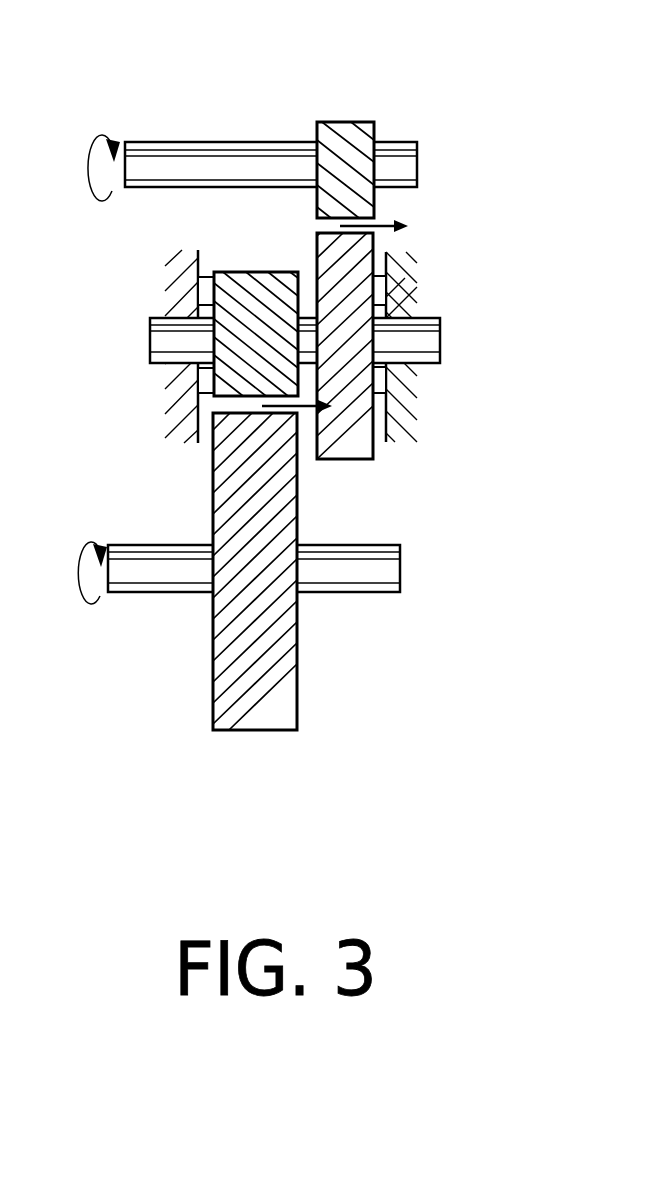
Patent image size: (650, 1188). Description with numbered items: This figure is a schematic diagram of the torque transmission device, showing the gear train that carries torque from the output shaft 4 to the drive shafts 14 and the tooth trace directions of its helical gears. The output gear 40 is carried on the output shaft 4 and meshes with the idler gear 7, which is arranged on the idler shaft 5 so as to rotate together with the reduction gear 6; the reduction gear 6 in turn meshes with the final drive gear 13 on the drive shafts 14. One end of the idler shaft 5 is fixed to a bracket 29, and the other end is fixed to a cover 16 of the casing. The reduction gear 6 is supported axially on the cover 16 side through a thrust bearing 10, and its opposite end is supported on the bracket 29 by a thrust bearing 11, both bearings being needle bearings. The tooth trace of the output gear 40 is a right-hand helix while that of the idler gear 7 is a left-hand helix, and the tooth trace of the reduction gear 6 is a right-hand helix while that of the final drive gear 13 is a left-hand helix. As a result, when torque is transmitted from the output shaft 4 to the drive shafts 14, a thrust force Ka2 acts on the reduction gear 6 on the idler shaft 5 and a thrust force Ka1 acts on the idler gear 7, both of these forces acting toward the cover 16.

The output shaft 4 is at (173, 170).
The output gear 40 is at (348, 140).
The reduction gear 6 is at (258, 272).
The idler gear 7 is at (375, 458).
The thrust bearing 10 is at (388, 293).
The idler shaft 5 is at (430, 318).
The thrust bearing 11 is at (205, 380).
The bracket 29 is at (176, 420).
The cover 16 is at (400, 415).
The final drive gear 13 is at (269, 718).
The drive shafts 14 is at (366, 575).
The thrust force Ka1 is at (380, 222).
The thrust force Ka2 is at (303, 412).